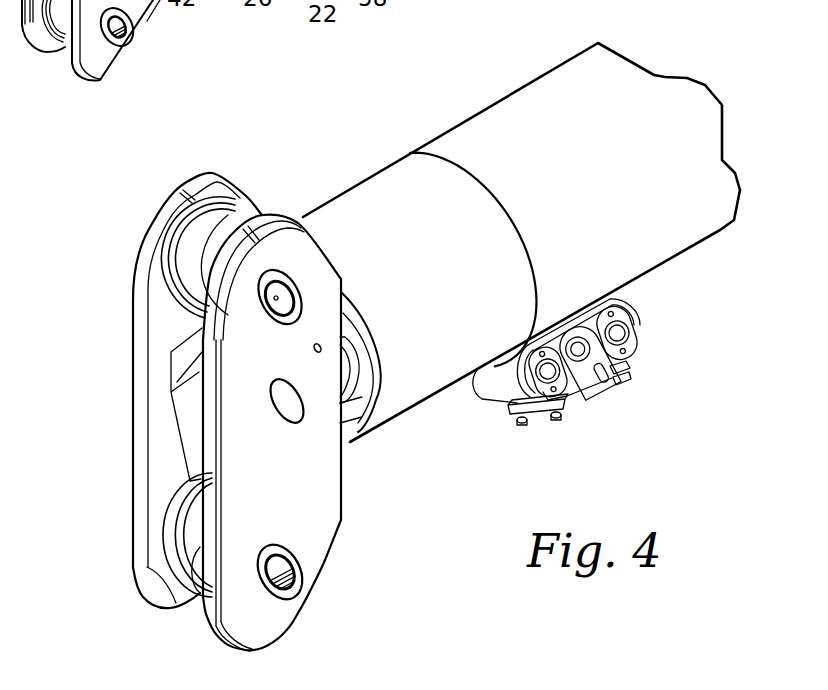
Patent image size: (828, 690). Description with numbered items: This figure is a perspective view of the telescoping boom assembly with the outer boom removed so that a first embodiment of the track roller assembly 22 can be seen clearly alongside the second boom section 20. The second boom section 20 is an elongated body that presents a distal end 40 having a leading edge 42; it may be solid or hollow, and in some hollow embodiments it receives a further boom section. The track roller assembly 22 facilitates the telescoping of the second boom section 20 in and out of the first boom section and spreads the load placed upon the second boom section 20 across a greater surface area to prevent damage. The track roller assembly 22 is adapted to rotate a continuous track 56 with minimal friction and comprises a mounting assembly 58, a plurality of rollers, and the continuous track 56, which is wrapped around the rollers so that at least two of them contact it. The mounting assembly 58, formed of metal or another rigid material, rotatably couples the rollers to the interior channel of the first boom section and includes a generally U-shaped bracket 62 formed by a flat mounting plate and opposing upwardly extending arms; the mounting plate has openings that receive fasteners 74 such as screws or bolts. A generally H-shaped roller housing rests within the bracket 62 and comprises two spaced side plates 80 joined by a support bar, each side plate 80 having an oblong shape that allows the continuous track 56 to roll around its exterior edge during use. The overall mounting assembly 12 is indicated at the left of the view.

The mounting bracket assembly 12 is at (95, 236).
The second boom section 20 is at (667, 100).
The track roller assembly 22 is at (581, 390).
The distal end 40 is at (301, 166).
The leading edge 42 is at (350, 433).
The continuous track 56 is at (500, 383).
The mounting assembly 58 is at (532, 443).
The U-shaped bracket 62 is at (625, 364).
The fasteners 74 is at (620, 387).
The side plates 80 is at (625, 318).